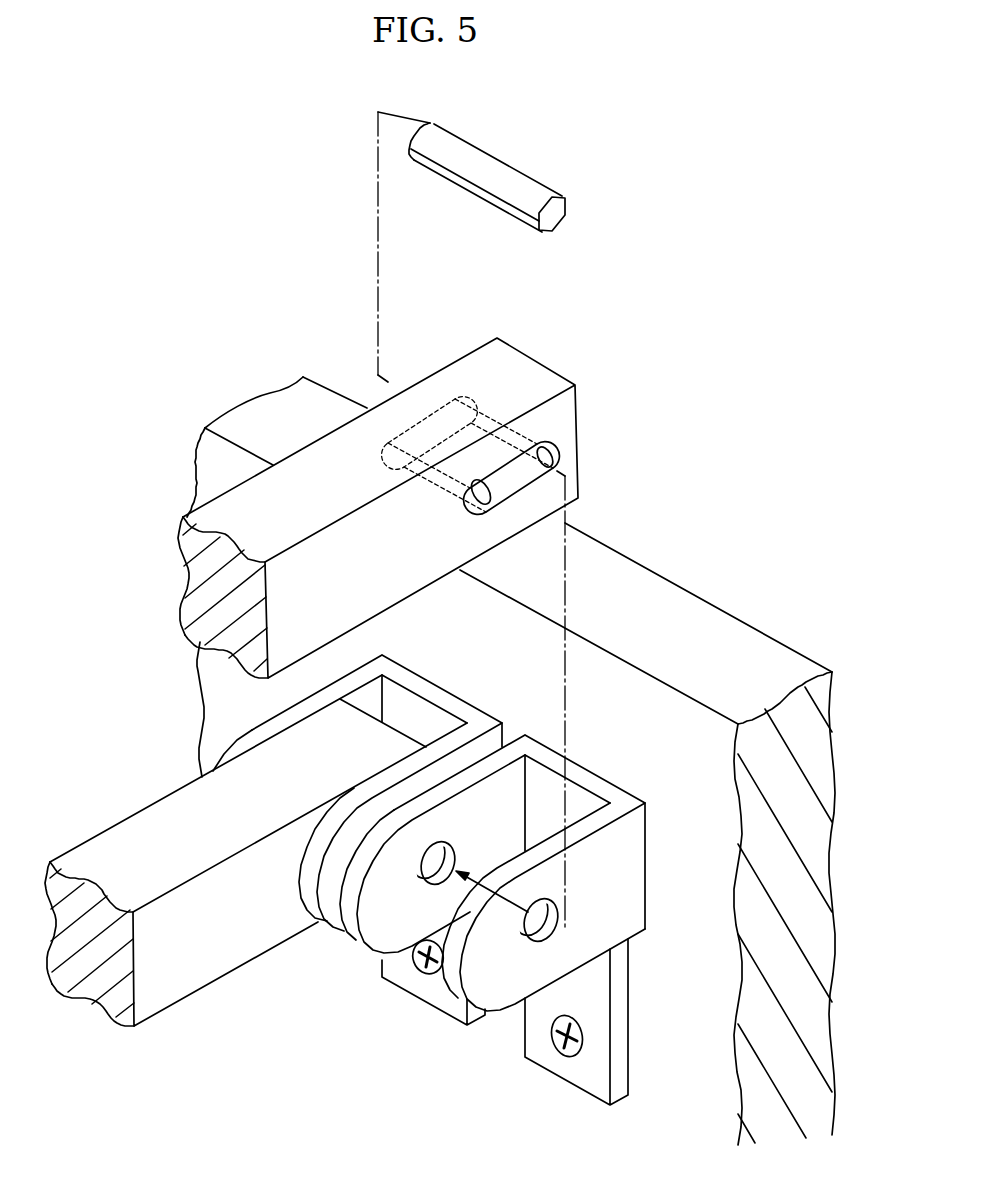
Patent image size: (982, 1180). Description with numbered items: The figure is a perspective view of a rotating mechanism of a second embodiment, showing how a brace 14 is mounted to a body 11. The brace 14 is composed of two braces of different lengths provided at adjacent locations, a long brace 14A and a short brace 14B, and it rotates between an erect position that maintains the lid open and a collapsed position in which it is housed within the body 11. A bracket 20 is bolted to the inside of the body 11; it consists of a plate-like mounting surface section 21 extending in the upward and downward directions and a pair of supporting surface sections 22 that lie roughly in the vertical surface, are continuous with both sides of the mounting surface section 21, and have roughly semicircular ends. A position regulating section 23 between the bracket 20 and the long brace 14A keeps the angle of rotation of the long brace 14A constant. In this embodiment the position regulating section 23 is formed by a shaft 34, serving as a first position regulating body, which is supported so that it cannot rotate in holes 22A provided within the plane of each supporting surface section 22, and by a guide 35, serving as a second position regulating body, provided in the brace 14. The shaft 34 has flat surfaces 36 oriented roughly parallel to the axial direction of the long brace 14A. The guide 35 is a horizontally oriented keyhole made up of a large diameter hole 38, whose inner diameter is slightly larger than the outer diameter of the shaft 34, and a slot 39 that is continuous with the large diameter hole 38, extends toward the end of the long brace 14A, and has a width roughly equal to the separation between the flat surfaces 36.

The body 11 is at (760, 644).
The brace 14 is at (177, 494).
The long brace 14A is at (517, 360).
The short brace 14B is at (124, 835).
The bracket 20 is at (430, 866).
The mounting surface section 21 is at (453, 702).
The supporting surface section 22 is at (252, 737).
The hole 22A is at (456, 850).
The position regulating section 23 is at (499, 241).
The shaft 34 is at (493, 168).
The guide 35 is at (550, 442).
The flat surface 36 is at (487, 202).
The large diameter hole 38 is at (556, 462).
The slot 39 is at (473, 506).